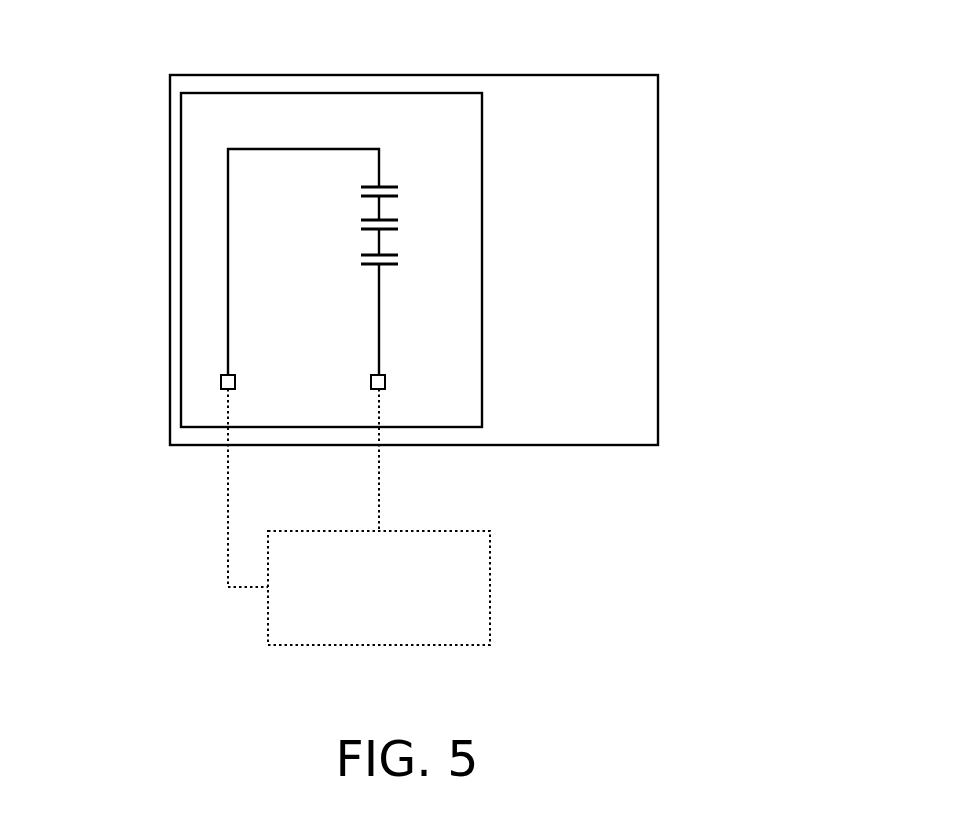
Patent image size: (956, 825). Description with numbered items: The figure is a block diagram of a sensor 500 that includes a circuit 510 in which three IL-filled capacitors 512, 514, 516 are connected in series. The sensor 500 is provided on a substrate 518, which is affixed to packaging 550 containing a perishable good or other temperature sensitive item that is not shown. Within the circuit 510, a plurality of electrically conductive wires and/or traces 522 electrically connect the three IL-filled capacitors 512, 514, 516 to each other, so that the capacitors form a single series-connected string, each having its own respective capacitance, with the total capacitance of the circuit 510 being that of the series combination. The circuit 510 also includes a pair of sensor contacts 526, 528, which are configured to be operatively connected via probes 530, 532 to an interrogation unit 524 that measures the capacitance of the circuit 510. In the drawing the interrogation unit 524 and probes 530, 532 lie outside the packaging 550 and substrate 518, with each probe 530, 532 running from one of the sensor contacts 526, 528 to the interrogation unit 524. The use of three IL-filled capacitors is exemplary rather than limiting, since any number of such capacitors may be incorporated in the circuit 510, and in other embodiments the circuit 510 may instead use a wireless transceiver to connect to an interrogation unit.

The sensor 500 is at (128, 88).
The circuit 510 is at (351, 244).
The IL-filled capacitor 512 is at (360, 188).
The IL-filled capacitor 514 is at (362, 226).
The IL-filled capacitor 516 is at (362, 264).
The substrate 518 is at (482, 144).
The electrically conductive wires and/or traces 522 is at (228, 340).
The interrogation unit 524 is at (490, 590).
The sensor contact 526 is at (235, 381).
The sensor contact 528 is at (386, 381).
The probe 530 is at (228, 484).
The probe 532 is at (379, 484).
The packaging 550 is at (658, 260).